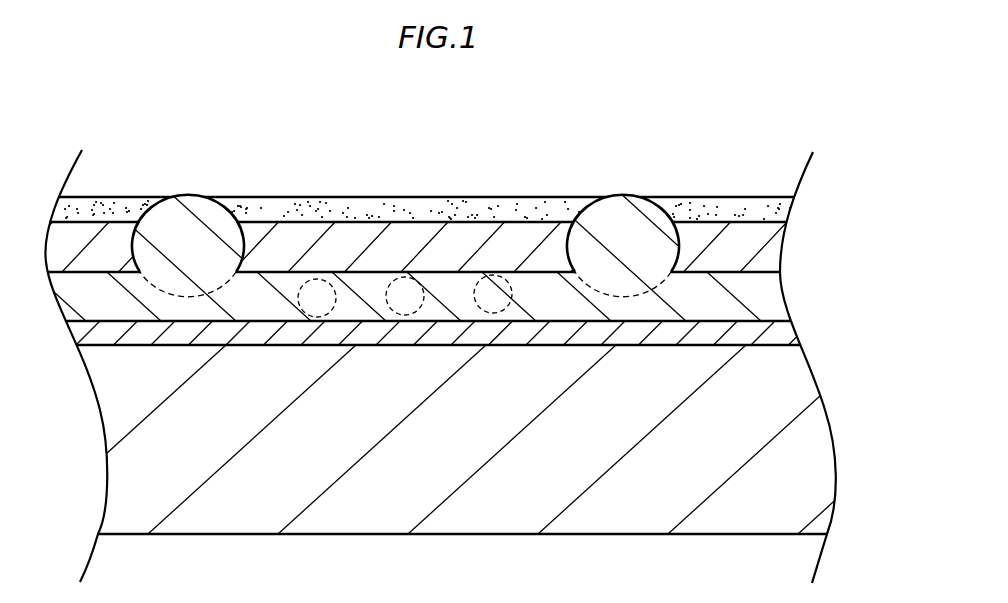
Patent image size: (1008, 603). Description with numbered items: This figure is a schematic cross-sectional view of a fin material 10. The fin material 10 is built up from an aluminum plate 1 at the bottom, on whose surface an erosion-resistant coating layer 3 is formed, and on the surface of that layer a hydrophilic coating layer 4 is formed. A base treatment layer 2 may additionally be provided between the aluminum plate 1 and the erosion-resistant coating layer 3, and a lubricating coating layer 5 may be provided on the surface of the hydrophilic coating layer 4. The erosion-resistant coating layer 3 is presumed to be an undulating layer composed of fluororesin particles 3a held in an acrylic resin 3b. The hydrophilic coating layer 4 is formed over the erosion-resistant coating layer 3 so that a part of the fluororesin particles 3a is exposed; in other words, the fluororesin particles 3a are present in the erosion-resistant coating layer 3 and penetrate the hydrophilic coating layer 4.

The aluminum plate 1 is at (807, 440).
The base treatment layer 2 is at (772, 332).
The erosion-resistant coating layer 3 is at (493, 207).
The fluororesin particles 3a is at (190, 230).
The acrylic resin 3b is at (368, 287).
The hydrophilic coating layer 4 is at (768, 250).
The lubricating coating layer 5 is at (780, 213).
The fin material 10 is at (712, 162).